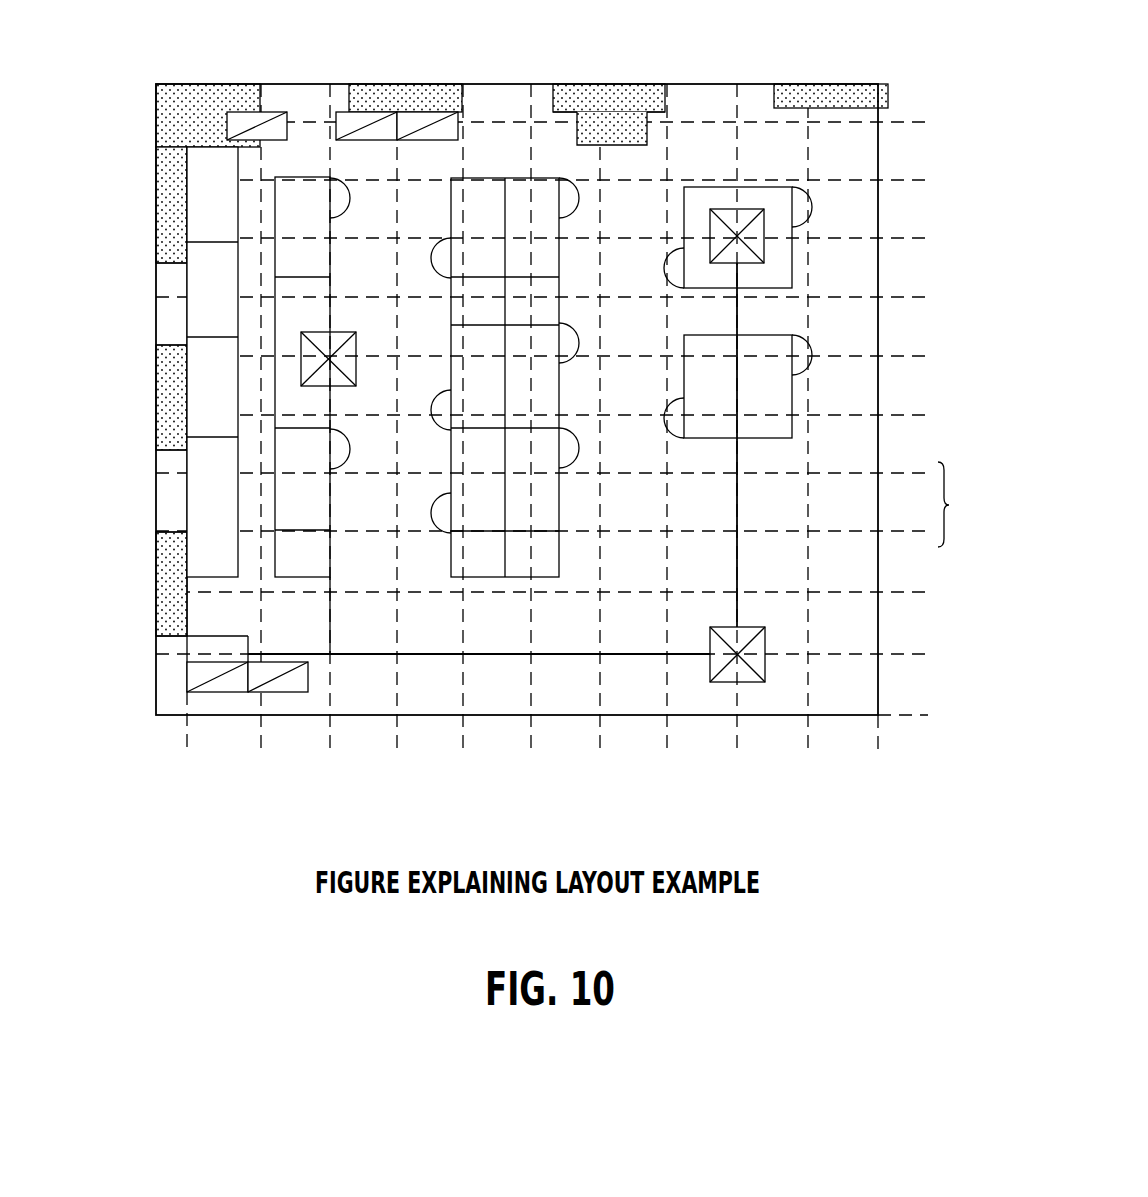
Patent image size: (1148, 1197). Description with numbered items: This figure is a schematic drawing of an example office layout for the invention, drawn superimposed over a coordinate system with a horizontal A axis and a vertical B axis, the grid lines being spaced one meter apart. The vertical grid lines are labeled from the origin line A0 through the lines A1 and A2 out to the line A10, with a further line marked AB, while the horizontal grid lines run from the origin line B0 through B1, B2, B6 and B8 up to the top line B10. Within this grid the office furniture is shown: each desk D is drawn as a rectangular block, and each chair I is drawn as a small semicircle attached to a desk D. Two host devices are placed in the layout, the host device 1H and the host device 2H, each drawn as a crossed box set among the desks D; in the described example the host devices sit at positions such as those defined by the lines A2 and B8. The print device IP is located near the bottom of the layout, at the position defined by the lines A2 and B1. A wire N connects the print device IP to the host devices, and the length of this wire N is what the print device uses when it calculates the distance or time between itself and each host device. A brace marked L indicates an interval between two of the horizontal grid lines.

The host device 1H is at (302, 338).
The host device 2H is at (720, 207).
The print device IP is at (723, 683).
The wire N is at (505, 656).
The layout region L is at (951, 504).
The desk D is at (533, 377).
The chair I is at (840, 202).
The A-axis grid line A10 is at (186, 739).
The A-axis grid line AB is at (330, 435).
The A-axis grid line A2 is at (739, 433).
The A-axis grid line A1 is at (807, 433).
The A-axis grid line A0 is at (880, 749).
The B-axis grid line B10 is at (562, 121).
The B-axis grid line B8 is at (557, 237).
The B-axis grid line B6 is at (557, 356).
The B-axis grid line B2 is at (557, 592).
The B-axis grid line B1 is at (557, 653).
The B-axis grid line B0 is at (918, 714).